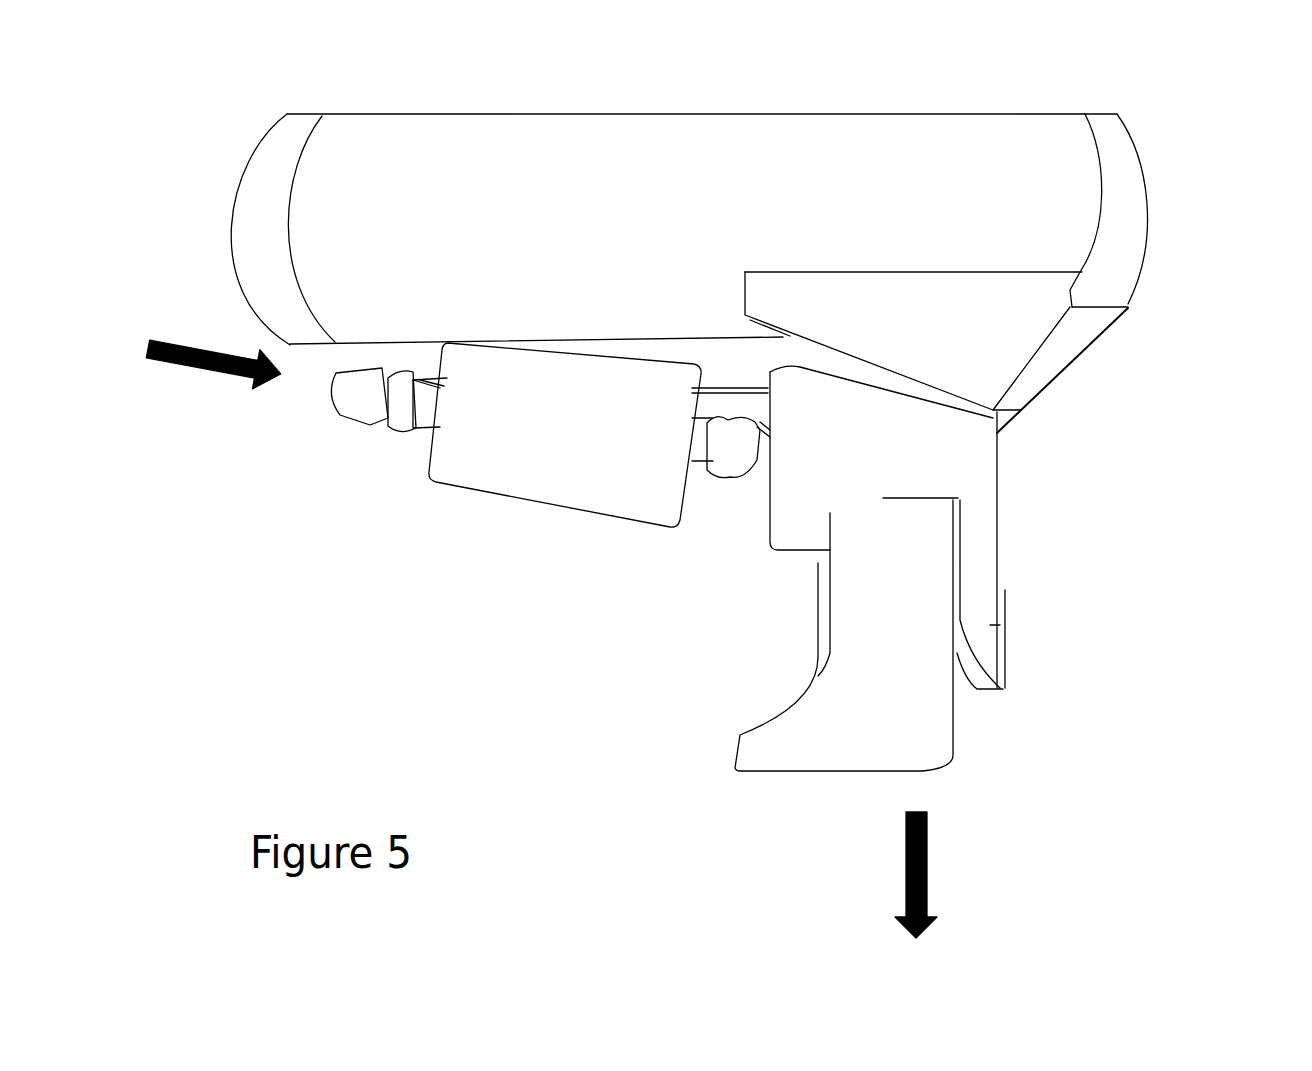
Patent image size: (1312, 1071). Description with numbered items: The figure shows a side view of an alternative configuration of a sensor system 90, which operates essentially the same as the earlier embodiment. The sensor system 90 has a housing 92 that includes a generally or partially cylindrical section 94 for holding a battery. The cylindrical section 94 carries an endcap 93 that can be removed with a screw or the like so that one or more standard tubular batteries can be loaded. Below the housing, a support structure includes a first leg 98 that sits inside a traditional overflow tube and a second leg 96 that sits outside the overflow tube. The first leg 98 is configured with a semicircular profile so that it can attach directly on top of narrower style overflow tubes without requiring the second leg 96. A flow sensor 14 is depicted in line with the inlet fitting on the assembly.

The sensor system 90 is at (1203, 433).
The housing 92 is at (510, 74).
The endcap 93 is at (838, 430).
The cylindrical section 94 is at (577, 218).
The second leg 96 is at (995, 626).
The first leg 98 is at (887, 658).
The flow sensor 14 is at (612, 423).